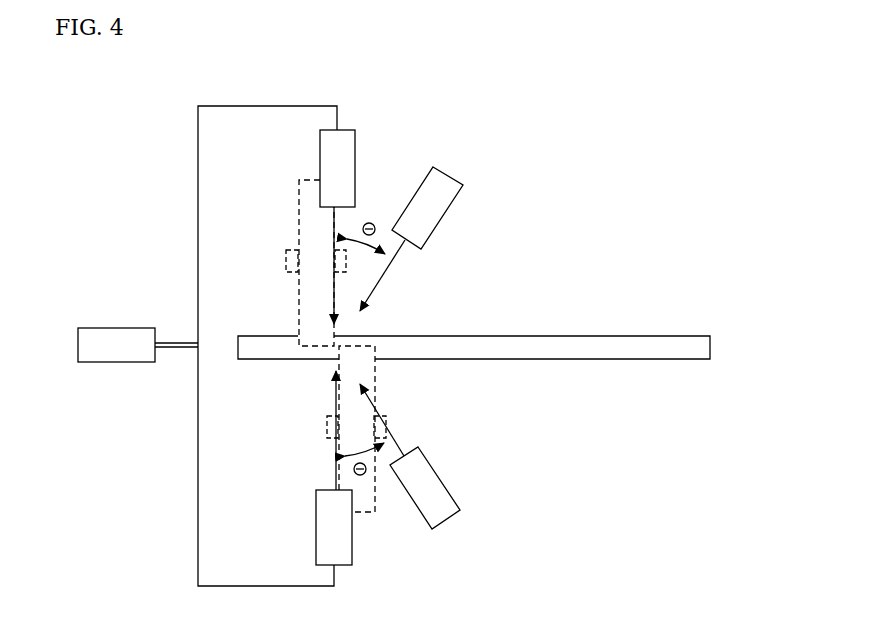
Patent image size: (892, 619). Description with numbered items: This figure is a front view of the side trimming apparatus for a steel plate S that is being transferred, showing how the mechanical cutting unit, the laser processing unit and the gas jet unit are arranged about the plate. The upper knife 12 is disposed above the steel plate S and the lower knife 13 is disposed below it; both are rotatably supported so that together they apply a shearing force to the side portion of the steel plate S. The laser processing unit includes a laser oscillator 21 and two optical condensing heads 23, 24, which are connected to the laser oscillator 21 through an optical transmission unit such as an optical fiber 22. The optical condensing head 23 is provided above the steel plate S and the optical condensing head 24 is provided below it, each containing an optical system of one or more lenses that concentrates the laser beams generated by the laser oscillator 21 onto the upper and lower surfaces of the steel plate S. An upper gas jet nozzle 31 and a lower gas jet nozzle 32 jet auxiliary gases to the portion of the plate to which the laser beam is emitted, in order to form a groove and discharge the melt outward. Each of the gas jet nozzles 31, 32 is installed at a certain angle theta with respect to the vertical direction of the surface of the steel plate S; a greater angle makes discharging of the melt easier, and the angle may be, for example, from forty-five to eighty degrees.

The optical fiber 22 is at (198, 176).
The laser oscillator 21 is at (118, 333).
The steel plate S is at (619, 345).
The upper knife 12 is at (306, 217).
The lower knife 13 is at (370, 370).
The optical condensing head 23 is at (327, 148).
The optical condensing head 24 is at (322, 528).
The upper gas jet nozzle 31 is at (437, 212).
The lower gas jet nozzle 32 is at (438, 490).